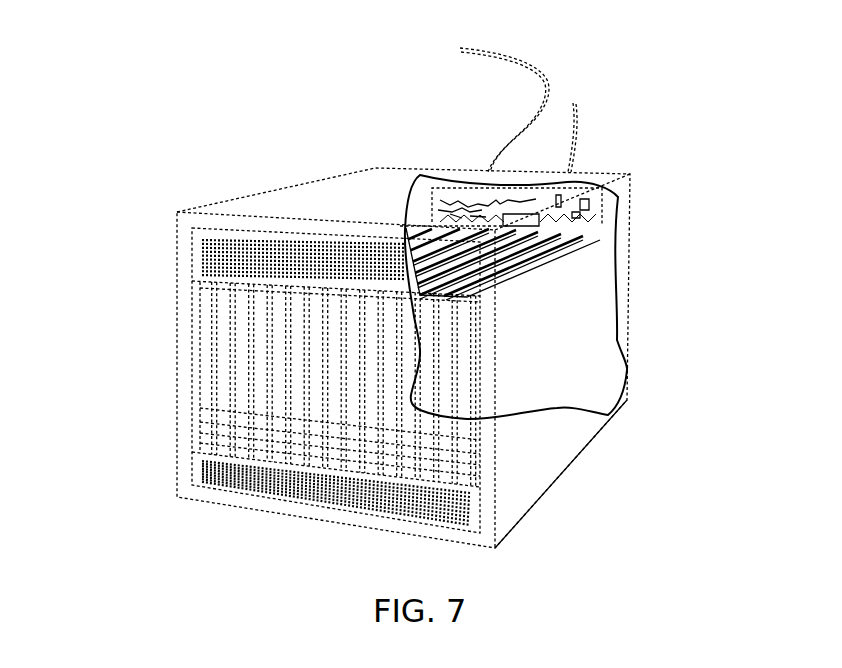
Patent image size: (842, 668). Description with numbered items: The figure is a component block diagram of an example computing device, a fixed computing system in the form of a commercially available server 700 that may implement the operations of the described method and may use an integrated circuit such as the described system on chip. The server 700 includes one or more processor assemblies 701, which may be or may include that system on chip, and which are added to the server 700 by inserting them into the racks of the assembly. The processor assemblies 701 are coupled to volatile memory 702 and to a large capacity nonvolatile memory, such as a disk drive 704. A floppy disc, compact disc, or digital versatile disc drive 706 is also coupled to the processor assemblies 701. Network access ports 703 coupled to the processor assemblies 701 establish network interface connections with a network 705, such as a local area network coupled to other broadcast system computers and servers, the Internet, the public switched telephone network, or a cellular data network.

The server 700 is at (156, 89).
The processor assemblies 701 is at (547, 235).
The volatile memory 702 is at (590, 200).
The network access ports 703 is at (243, 330).
The disk drive 704 is at (222, 358).
The network 705 is at (553, 93).
The disc drive 706 is at (262, 386).